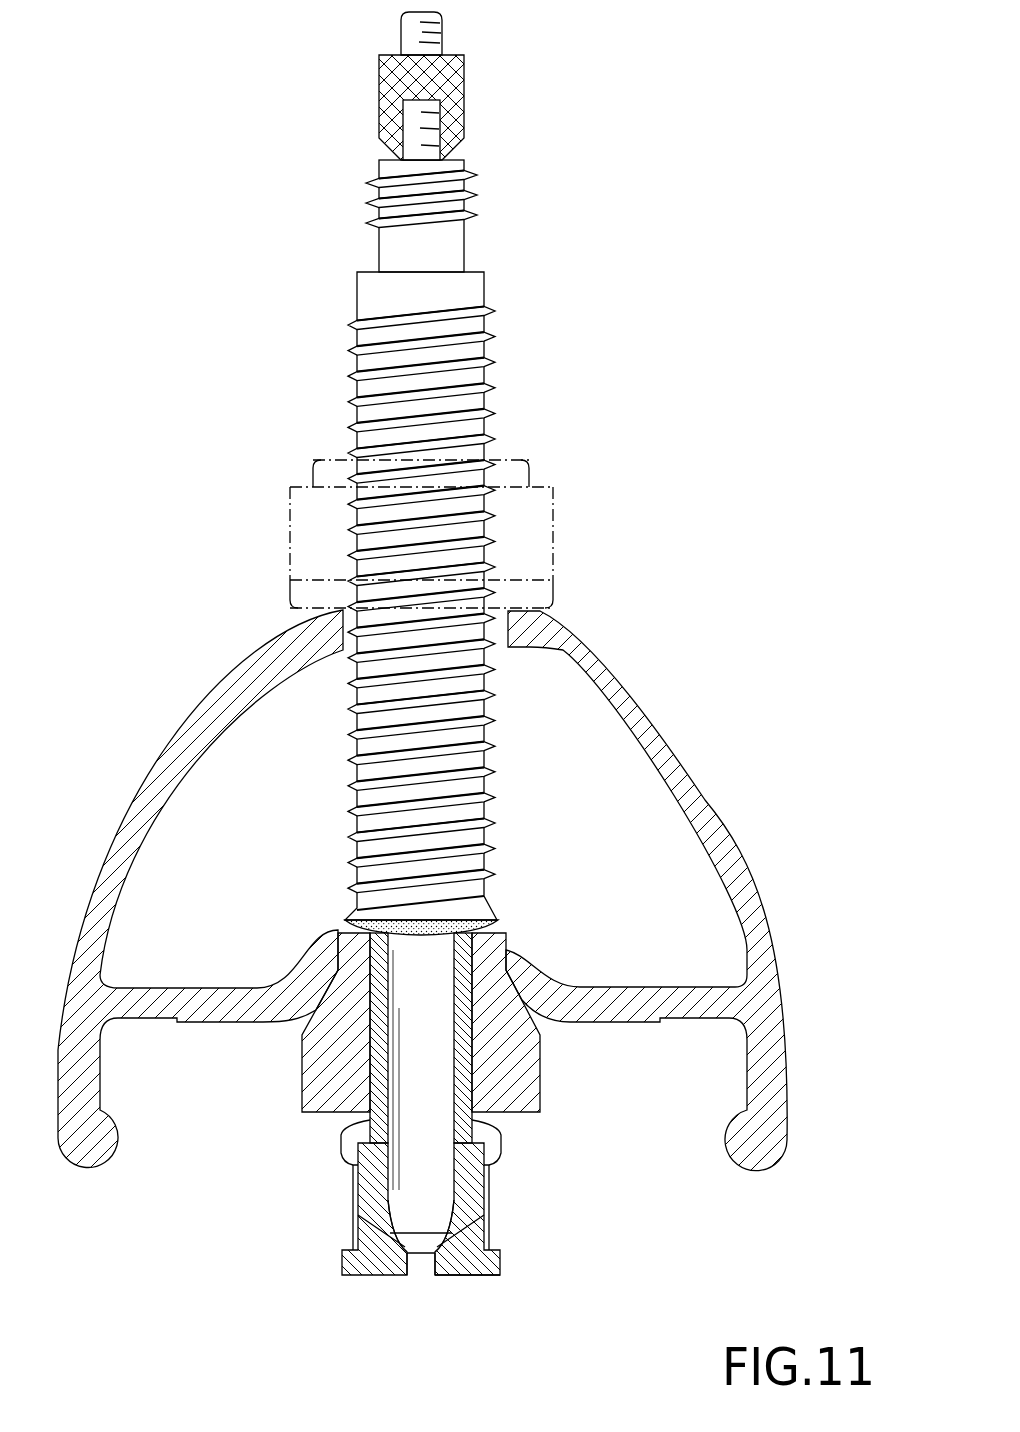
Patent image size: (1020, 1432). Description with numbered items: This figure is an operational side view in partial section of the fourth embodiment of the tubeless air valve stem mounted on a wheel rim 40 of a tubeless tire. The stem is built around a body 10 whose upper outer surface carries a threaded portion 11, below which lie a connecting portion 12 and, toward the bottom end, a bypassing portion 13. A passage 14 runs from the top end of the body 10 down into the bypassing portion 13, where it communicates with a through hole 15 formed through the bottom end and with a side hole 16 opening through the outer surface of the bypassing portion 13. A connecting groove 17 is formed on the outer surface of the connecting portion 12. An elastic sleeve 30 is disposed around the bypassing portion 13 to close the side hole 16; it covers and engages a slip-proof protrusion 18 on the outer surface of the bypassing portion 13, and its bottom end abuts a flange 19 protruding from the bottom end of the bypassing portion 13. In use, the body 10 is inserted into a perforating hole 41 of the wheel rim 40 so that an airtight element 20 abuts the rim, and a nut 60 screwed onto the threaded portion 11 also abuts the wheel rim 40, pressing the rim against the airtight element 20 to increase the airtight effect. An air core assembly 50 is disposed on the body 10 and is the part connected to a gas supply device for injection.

The body 10 is at (497, 466).
The threaded portion 11 is at (492, 367).
The connecting portion 12 is at (401, 1061).
The bypassing portion 13 is at (398, 1223).
The passage 14 is at (478, 950).
The through hole 15 is at (436, 1266).
The side hole 16 is at (497, 1210).
The connecting groove 17 is at (350, 1115).
The slip-proof protrusion 18 is at (494, 1142).
The flange 19 is at (498, 1262).
The airtight element 20 is at (530, 1047).
The sleeve 30 is at (500, 1222).
The wheel rim 40 is at (422, 890).
The perforating hole 41 is at (343, 652).
The air core assembly 50 is at (472, 205).
The nut 60 is at (290, 518).